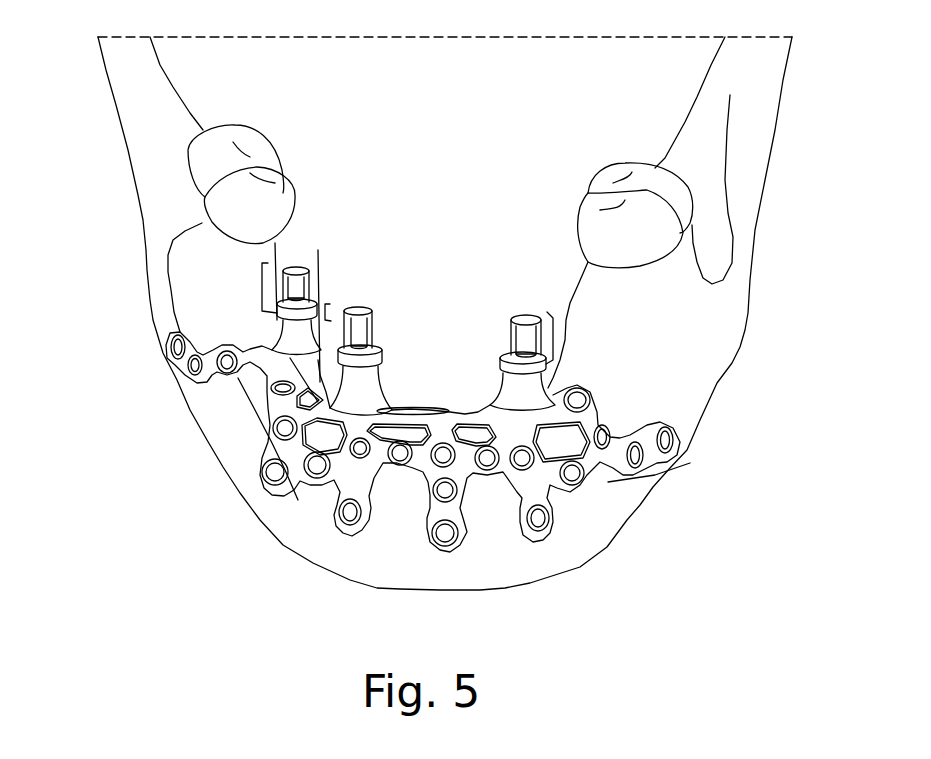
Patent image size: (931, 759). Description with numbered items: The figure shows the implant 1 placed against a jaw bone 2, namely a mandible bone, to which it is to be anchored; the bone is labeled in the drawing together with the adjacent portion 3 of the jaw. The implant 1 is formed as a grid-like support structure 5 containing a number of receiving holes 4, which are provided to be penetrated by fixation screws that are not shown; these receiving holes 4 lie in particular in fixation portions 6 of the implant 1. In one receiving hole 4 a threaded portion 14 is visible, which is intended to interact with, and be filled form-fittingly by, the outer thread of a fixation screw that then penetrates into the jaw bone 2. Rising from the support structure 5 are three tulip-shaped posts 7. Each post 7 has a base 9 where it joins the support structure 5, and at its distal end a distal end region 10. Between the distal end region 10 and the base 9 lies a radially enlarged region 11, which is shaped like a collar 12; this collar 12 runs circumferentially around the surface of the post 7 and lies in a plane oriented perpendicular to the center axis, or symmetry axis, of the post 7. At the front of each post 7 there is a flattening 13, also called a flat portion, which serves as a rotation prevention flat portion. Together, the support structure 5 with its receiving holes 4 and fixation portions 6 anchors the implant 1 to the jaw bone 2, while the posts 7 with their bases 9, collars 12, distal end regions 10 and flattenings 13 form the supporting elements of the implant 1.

The implant 1 is at (718, 403).
The jaw bone 2 is at (423, 495).
The plate body 3 is at (500, 537).
The receiving hole 4 is at (672, 437).
The support structure 5 is at (357, 432).
The fixation portion 6 is at (650, 478).
The post 7 is at (380, 360).
The base 9 is at (285, 322).
The distal end region 10 is at (260, 288).
The radially enlarged region 11 is at (288, 496).
The collar 12 is at (285, 337).
The flattening 13 is at (294, 286).
The threaded portion 14 is at (550, 522).